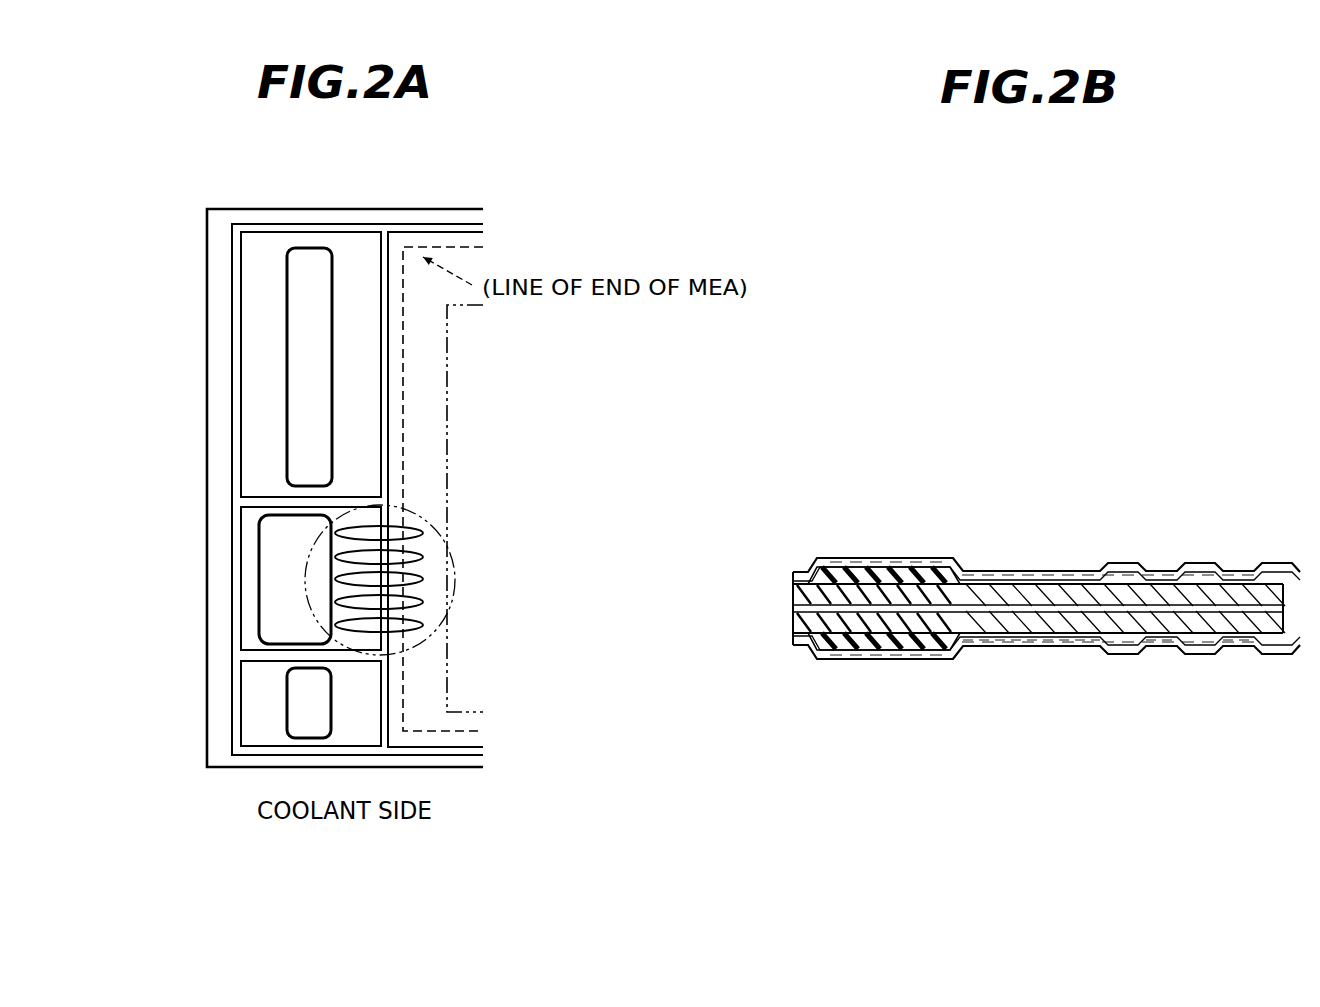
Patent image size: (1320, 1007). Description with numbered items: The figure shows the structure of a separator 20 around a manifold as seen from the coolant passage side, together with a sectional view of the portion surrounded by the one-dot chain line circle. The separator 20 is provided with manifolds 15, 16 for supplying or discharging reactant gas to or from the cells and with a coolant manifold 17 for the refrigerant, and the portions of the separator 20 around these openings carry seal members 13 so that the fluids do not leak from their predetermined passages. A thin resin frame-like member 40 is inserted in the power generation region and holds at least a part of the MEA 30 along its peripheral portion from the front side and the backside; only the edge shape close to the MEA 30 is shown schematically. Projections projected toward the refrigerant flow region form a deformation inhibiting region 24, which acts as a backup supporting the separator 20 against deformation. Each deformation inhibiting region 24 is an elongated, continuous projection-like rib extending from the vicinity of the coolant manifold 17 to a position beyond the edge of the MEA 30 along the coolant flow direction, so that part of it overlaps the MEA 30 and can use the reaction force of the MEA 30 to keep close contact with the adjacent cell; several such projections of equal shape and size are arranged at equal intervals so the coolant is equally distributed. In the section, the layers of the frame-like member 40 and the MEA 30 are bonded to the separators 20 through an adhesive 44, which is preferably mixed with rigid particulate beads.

In FIG. 2A, the seal member 13 is at (232, 455).
In FIG. 2A, the manifold 15 is at (330, 290).
In FIG. 2A, the manifold 16 is at (298, 738).
In FIG. 2A, the coolant manifold 17 is at (282, 640).
In FIG. 2A, the separator 20 is at (215, 355).
In FIG. 2B, the separator 20 is at (1280, 569).
In FIG. 2A, the deformation inhibiting region 24 is at (432, 571).
In FIG. 2B, the deformation inhibiting region 24 is at (925, 559).
In FIG. 2A, the MEA 30 is at (398, 268).
In FIG. 2B, the MEA 30 is at (1158, 640).
In FIG. 2A, the frame-like member 40 is at (436, 357).
In FIG. 2B, the frame-like member 40 is at (797, 574).
In FIG. 2B, the adhesive 44 is at (856, 560).